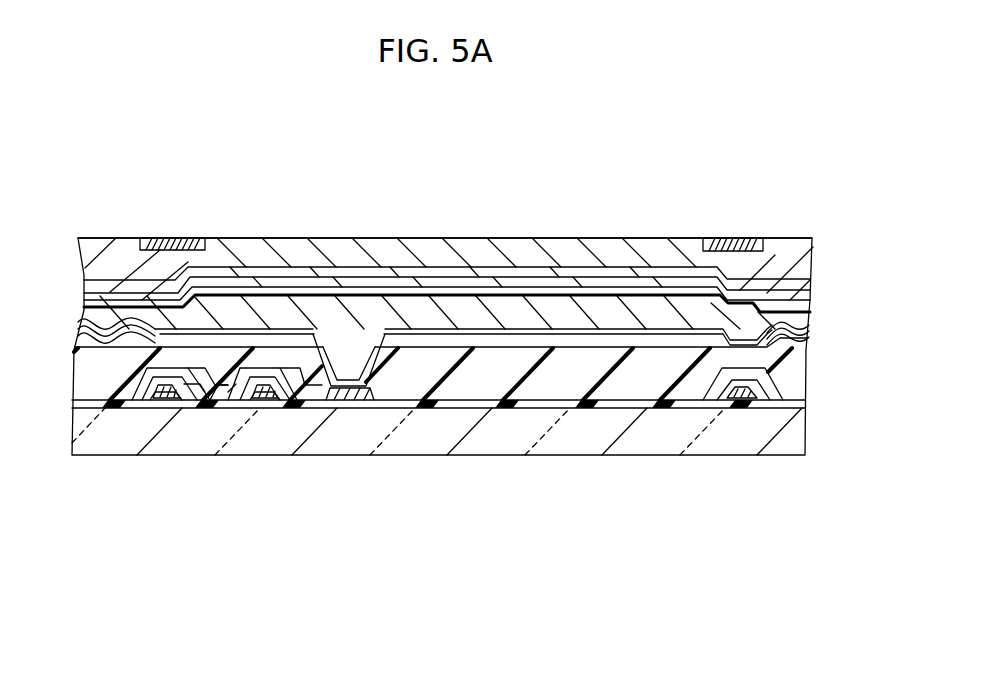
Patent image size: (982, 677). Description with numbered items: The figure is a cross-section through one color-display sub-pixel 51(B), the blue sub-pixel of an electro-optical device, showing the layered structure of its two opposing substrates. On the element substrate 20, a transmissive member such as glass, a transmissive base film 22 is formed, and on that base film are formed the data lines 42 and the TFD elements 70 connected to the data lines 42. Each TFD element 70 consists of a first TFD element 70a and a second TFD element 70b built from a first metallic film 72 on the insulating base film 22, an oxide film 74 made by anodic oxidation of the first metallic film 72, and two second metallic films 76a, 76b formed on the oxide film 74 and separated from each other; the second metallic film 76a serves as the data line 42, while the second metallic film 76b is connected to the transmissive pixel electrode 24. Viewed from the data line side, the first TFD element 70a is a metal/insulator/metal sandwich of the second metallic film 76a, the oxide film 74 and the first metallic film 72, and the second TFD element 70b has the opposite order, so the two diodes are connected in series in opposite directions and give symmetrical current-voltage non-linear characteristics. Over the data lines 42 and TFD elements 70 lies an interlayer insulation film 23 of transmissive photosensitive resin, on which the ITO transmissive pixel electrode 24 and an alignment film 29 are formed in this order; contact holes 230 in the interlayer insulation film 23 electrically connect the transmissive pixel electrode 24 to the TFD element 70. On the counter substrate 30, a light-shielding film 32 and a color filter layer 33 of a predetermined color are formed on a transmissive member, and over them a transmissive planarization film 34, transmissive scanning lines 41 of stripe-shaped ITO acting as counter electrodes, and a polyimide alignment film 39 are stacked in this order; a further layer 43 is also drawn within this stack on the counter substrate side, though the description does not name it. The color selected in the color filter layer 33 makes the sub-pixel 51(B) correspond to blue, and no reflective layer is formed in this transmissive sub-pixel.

The element substrate 20 is at (822, 372).
The base film 22 is at (546, 408).
The interlayer insulation film 23 is at (590, 377).
The transmissive pixel electrode 24 is at (630, 348).
The alignment film 29 is at (667, 308).
The counter substrate 30 is at (822, 237).
The light-shielding film 32 is at (168, 237).
The color filter layer 33 is at (464, 248).
The transmissive planarization film 34 is at (597, 276).
The alignment film 39 is at (698, 328).
The transmissive scanning line 41 is at (649, 283).
The data line 42 is at (156, 413).
The overcoat layer 43 is at (540, 320).
The color-display sub-pixel 51 is at (716, 122).
The TFD element 70 is at (338, 185).
The first TFD element 70a is at (231, 343).
The second TFD element 70b is at (288, 345).
The first metallic film 72 is at (285, 403).
The oxide film 74 is at (246, 403).
The second metallic film 76a is at (216, 403).
The second metallic film 76b is at (320, 402).
The contact hole 230 is at (377, 365).